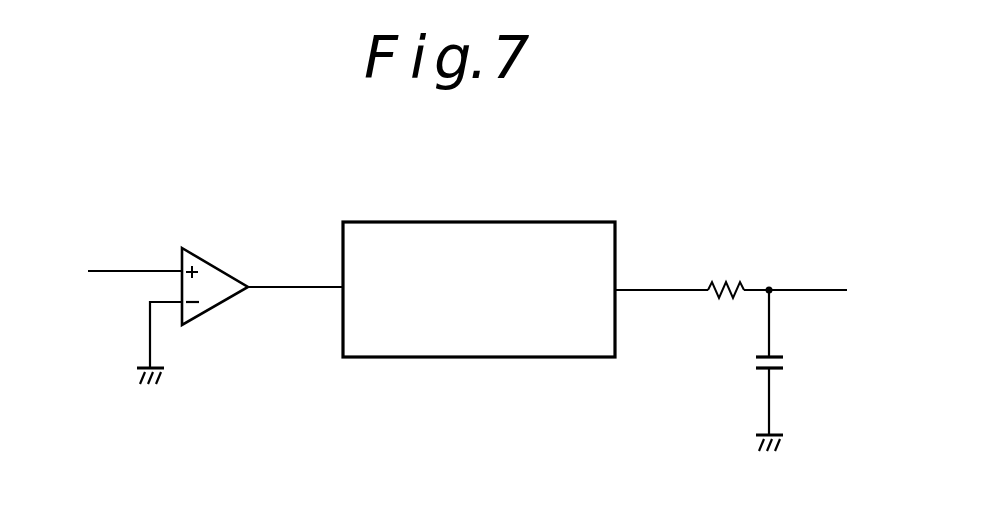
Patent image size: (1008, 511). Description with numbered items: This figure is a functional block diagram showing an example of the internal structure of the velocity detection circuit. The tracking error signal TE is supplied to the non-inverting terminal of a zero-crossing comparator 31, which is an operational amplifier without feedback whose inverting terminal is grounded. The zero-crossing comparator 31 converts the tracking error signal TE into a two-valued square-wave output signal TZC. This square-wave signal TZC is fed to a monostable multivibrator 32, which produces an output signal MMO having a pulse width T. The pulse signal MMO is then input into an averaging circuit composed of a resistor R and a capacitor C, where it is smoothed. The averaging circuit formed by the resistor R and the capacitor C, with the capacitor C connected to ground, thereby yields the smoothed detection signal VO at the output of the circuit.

The zero-crossing comparator 31 is at (220, 268).
The monostable multivibrator 32 is at (596, 232).
The resistor R is at (726, 273).
The capacitor C is at (785, 370).
The tracking error signal TE is at (109, 271).
The output signal of the zero-crossing comparator TZC is at (295, 272).
The output signal of the monostable multivibrator MMO is at (661, 273).
The detection signal VO is at (819, 292).